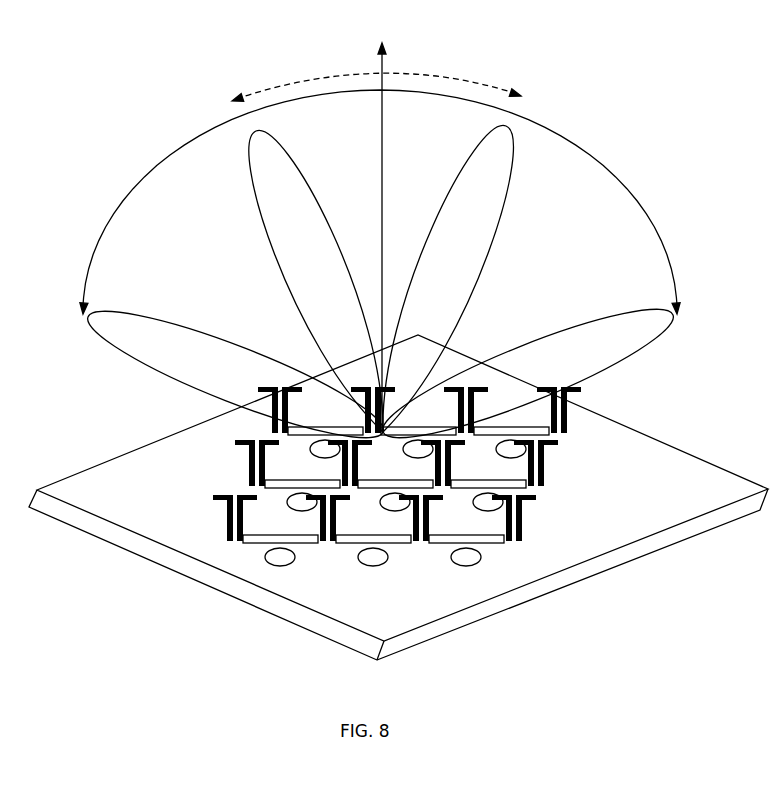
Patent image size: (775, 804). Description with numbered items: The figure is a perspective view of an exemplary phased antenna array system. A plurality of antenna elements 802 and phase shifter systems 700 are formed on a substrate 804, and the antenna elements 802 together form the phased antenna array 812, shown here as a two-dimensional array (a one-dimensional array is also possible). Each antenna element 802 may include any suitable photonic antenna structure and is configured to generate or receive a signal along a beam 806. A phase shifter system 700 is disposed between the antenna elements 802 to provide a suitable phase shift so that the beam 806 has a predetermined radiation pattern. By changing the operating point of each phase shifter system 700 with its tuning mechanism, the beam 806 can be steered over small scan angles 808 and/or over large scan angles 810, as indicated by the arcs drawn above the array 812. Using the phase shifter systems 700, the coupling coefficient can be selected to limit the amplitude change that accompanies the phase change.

The phase shifter system 700 is at (405, 539).
The antenna element 802 is at (521, 514).
The substrate 804 is at (657, 542).
The beam 806 is at (293, 293).
The small scan angles 808 is at (508, 80).
The large scan angles 810 is at (638, 182).
The array 812 is at (615, 404).